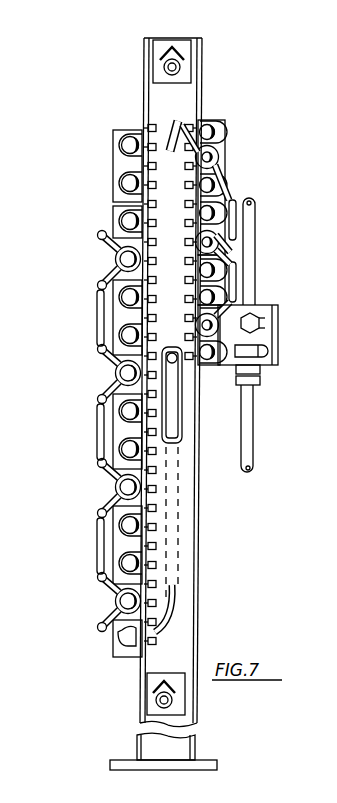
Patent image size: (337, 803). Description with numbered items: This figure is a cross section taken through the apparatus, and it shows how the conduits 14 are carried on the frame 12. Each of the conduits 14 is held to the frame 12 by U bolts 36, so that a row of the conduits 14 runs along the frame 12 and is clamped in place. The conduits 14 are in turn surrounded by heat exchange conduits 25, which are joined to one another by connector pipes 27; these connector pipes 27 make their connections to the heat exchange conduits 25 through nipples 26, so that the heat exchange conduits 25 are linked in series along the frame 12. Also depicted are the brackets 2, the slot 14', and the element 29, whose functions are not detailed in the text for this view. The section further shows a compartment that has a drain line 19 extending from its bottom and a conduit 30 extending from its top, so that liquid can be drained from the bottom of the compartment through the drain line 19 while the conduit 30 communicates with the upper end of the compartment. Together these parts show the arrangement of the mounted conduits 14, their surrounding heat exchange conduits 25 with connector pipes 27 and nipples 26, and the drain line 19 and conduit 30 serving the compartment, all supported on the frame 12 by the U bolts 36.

The bracket 2 is at (130, 130).
The frame 12 is at (198, 611).
The conduits 14 is at (174, 383).
The slot 14' is at (241, 489).
The drain line 19 is at (250, 434).
The heat exchange conduits 25 is at (118, 260).
The nipples 26 is at (110, 246).
The connector pipes 27 is at (97, 312).
The support 29 is at (327, 506).
The conduit 30 is at (255, 256).
The U bolts 36 is at (116, 146).